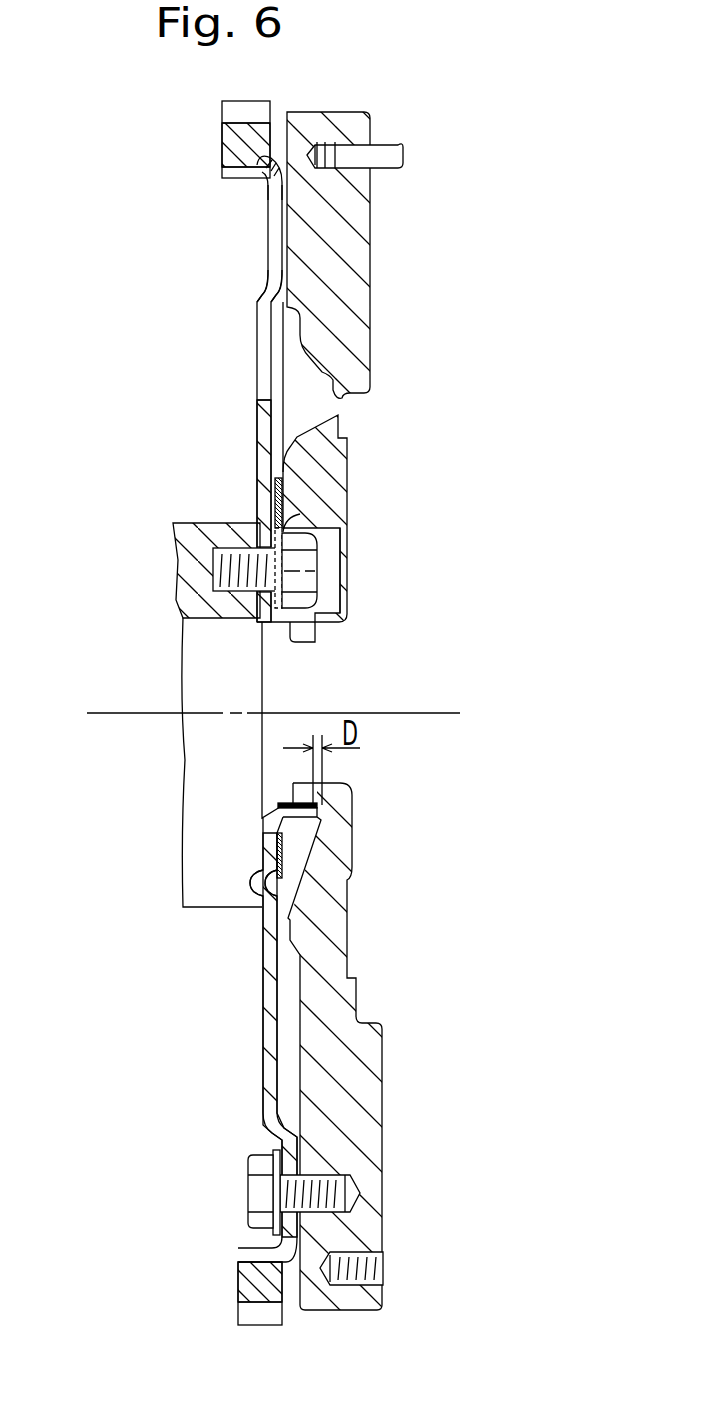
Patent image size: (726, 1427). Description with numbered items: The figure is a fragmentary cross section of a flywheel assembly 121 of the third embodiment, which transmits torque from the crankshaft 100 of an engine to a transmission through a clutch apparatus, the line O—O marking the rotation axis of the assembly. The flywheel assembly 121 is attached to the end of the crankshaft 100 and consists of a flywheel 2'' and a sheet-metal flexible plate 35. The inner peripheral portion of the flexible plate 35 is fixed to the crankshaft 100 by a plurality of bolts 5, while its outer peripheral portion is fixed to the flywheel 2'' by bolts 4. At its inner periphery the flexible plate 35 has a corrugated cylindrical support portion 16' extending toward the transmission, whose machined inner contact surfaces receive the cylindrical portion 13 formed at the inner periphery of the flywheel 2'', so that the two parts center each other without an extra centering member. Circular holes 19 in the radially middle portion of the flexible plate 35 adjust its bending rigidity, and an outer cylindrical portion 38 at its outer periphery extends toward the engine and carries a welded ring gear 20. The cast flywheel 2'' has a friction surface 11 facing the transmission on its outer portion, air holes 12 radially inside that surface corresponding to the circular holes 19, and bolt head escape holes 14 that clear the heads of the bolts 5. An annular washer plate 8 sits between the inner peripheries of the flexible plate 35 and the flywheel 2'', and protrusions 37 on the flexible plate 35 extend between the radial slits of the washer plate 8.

The flywheel 2'' is at (396, 212).
The bolts 4 is at (260, 1192).
The bolts 5 is at (295, 572).
The washer plate 8 is at (297, 522).
The friction surface 11 is at (370, 212).
The air holes 12 is at (350, 408).
The cylindrical portion 13 is at (303, 643).
The bolt head escape holes 14 is at (350, 587).
The cylindrical support portion 16' is at (232, 1046).
The circular holes 19 is at (263, 292).
The ring gear 20 is at (230, 141).
The flexible plate 35 is at (231, 368).
The protrusions 37 is at (250, 883).
The outer cylindrical portion 38 is at (225, 182).
The crankshaft 100 is at (183, 556).
The flywheel assembly 121 is at (462, 369).
The rotation axis O is at (269, 713).